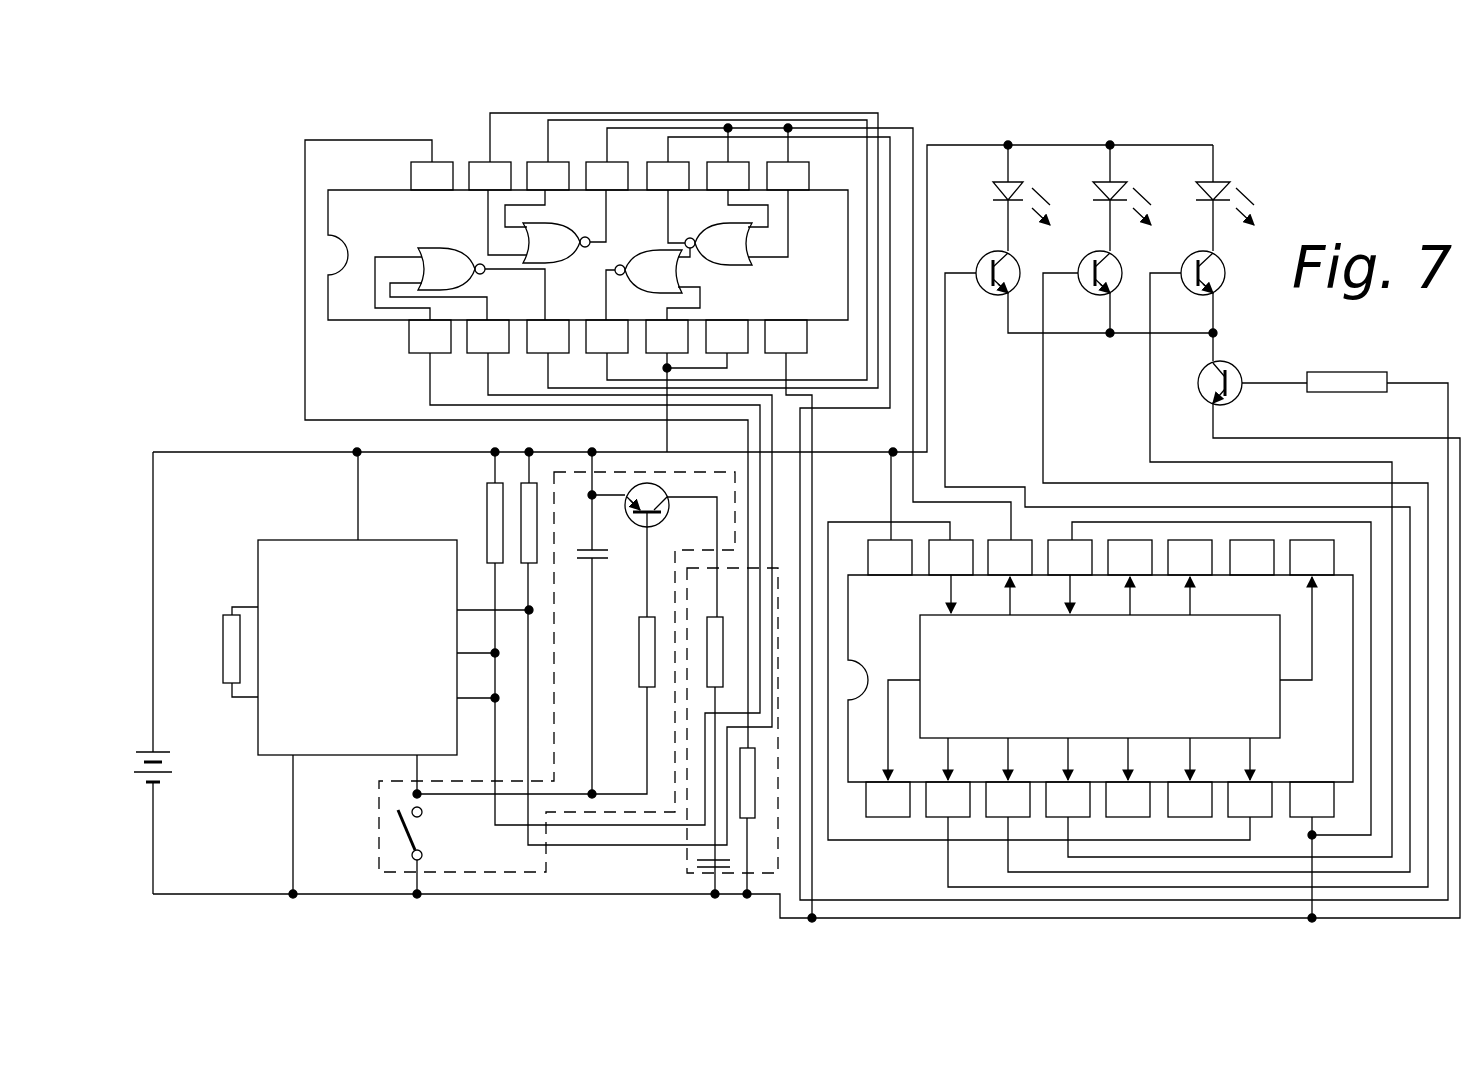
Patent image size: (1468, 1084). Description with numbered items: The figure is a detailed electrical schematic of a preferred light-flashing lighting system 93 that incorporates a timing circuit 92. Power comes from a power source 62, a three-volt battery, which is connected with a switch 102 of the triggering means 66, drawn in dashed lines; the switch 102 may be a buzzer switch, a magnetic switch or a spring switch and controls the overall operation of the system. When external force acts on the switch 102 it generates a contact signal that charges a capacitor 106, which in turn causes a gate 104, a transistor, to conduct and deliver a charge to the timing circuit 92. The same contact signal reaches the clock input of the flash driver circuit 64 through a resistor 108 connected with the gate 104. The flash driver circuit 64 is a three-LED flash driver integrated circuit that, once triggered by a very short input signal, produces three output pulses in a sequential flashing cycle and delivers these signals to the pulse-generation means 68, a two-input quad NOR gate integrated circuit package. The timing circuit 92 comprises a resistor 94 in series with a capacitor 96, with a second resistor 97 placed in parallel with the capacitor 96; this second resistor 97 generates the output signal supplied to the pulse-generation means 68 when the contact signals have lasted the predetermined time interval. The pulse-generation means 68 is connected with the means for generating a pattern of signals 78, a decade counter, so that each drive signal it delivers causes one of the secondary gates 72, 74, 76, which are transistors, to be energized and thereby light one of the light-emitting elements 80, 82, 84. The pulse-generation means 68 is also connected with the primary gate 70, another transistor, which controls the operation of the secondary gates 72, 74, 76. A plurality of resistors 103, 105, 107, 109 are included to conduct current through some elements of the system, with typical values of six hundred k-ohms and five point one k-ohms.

The power source 62 is at (168, 748).
The flash driver circuit 64 is at (300, 535).
The triggering means 66 is at (535, 880).
The pulse-generation means 68 is at (500, 107).
The primary gate 70 is at (1243, 362).
The secondary gate 72 is at (985, 250).
The secondary gate 74 is at (1080, 255).
The secondary gate 76 is at (1185, 255).
The means for generating a pattern of signals 78 is at (988, 530).
The light-emitting element 80 is at (995, 180).
The light-emitting element 82 is at (1097, 180).
The light-emitting element 84 is at (1200, 180).
The timing circuit 92 is at (697, 883).
The lighting system 93 is at (1280, 155).
The resistor 94 is at (722, 622).
The capacitor 96 is at (684, 863).
The second resistor 97 is at (762, 805).
The switch 102 is at (428, 850).
The resistor 103 is at (215, 625).
The gate 104 is at (655, 482).
The resistor 105 is at (482, 502).
The capacitor 106 is at (580, 563).
The resistor 107 is at (529, 480).
The resistor 108 is at (635, 680).
The resistor 109 is at (1380, 367).